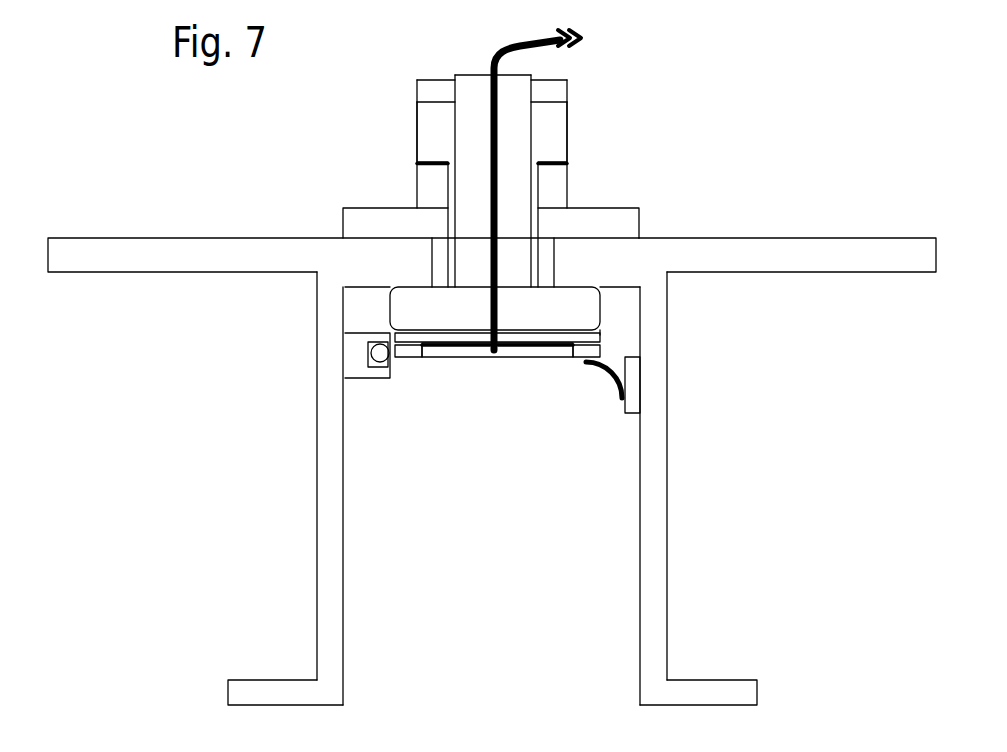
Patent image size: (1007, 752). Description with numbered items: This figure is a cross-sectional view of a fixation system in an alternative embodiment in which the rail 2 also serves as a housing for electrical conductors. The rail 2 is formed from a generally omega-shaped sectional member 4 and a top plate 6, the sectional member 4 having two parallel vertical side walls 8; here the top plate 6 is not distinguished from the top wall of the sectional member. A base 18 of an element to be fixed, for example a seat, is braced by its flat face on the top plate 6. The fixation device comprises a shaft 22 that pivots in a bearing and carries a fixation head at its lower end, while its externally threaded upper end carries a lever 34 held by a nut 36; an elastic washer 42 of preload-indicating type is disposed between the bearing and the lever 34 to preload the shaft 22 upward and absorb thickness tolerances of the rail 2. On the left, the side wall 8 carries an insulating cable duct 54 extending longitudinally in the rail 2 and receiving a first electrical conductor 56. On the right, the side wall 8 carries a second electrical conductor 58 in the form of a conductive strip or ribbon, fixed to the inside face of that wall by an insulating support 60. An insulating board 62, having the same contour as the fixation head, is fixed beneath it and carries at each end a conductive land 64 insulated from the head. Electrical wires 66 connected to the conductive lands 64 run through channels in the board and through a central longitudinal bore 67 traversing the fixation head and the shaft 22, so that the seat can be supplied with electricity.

The rail 2 is at (951, 231).
The sectional member 4 is at (705, 706).
The top plate 6 is at (118, 240).
The side walls 8 is at (323, 508).
The base 18 is at (632, 223).
The shaft 22 is at (453, 184).
The lever 34 is at (427, 131).
The nut 36 is at (427, 89).
The elastic washer 42 is at (417, 163).
The cable duct 54 is at (357, 352).
The first electrical conductor 56 is at (394, 364).
The second electrical conductor 58 is at (606, 373).
The insulating support 60 is at (632, 389).
The insulating board 62 is at (538, 361).
The conductive land 64 is at (414, 357).
The electrical wires 66 is at (575, 52).
The central longitudinal bore 67 is at (503, 207).